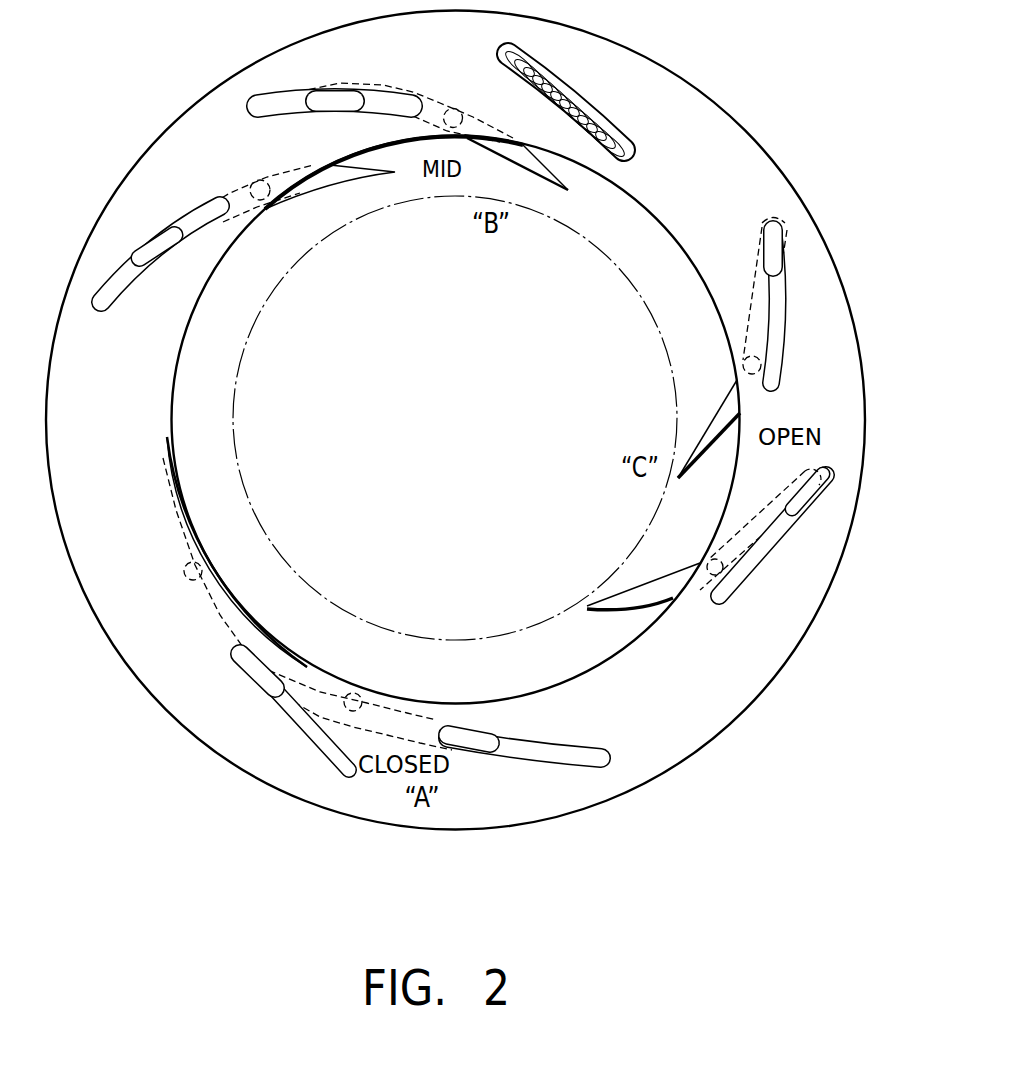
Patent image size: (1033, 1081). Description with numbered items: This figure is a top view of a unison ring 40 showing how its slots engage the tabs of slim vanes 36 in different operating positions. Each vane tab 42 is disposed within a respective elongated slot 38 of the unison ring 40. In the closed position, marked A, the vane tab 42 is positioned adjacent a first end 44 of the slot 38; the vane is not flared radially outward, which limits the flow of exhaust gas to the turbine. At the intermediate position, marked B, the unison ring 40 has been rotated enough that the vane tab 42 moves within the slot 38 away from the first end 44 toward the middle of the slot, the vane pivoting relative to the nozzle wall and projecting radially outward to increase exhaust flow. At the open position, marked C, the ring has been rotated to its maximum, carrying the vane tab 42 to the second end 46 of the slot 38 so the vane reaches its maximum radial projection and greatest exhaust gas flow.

The slim vane 36 is at (648, 604).
The elongated slot 38 is at (274, 115).
The unison ring 40 is at (817, 280).
The vane tab 42 is at (337, 97).
The first end 44 is at (407, 92).
The second end 46 is at (828, 479).